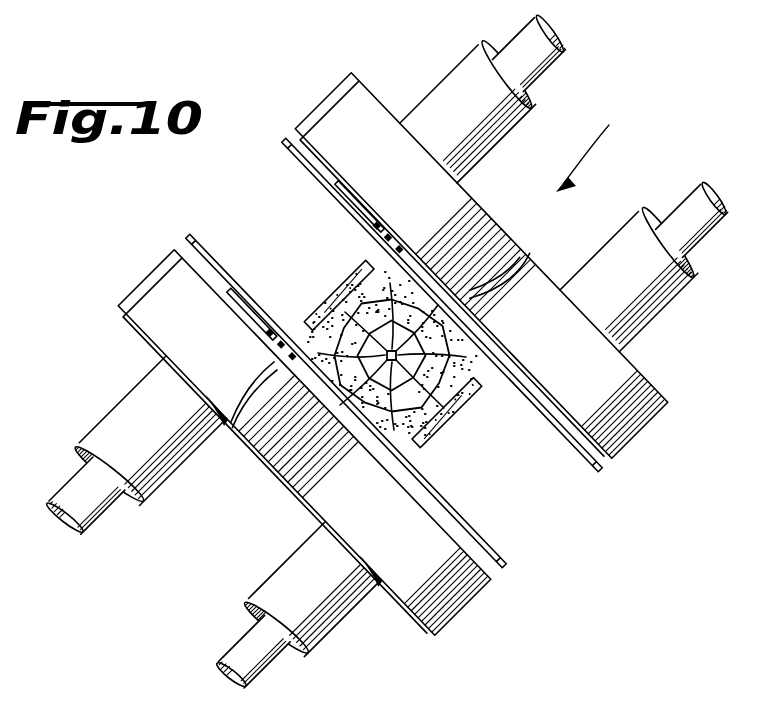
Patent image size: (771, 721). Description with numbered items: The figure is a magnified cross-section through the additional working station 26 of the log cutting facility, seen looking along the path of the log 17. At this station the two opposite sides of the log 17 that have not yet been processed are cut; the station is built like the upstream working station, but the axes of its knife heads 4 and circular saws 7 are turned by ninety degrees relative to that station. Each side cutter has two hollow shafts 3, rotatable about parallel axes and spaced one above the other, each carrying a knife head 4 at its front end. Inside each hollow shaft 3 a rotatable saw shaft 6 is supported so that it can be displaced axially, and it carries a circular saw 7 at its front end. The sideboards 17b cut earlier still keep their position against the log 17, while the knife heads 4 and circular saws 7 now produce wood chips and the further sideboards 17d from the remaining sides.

The hollow shaft 3 is at (447, 90).
The knife head 4 is at (352, 115).
The saw shaft 6 is at (556, 44).
The circular saw 7 is at (204, 245).
The log 17 is at (232, 428).
The sideboard 17b is at (336, 290).
The sideboard 17d is at (500, 276).
The working station 26 is at (599, 144).